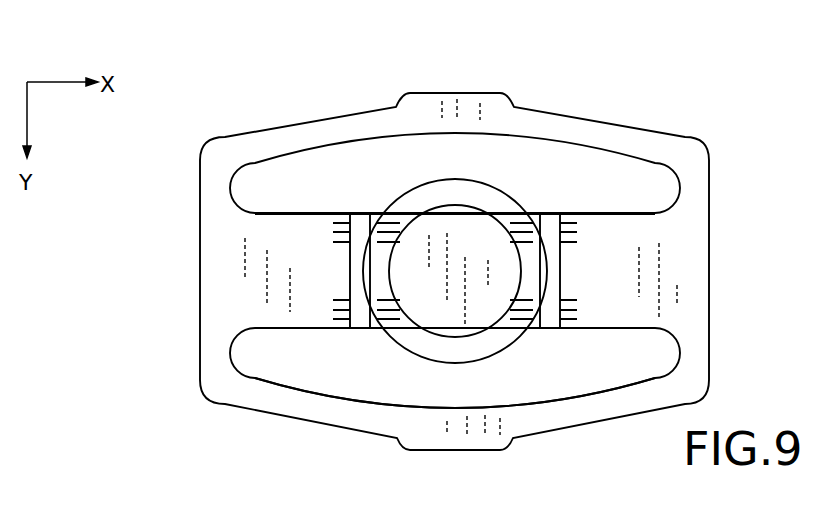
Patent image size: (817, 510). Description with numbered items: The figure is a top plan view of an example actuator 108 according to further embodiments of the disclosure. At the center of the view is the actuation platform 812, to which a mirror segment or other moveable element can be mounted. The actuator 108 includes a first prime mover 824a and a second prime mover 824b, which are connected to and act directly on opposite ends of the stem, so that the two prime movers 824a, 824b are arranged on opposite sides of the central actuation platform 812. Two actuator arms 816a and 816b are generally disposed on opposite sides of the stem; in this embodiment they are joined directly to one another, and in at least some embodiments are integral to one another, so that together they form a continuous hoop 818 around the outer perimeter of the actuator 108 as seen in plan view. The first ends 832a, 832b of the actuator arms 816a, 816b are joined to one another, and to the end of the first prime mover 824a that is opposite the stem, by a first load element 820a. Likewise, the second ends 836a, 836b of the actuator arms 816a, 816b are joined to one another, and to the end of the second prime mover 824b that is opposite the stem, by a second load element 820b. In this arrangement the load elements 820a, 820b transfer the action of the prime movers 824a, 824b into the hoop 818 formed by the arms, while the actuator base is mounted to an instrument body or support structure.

The actuator 108 is at (447, 76).
The actuation platform 812 is at (480, 220).
The actuator arm 816a is at (562, 428).
The actuator arm 816b is at (240, 137).
The continuous hoop 818 is at (342, 417).
The first load element 820a is at (283, 243).
The second load element 820b is at (625, 233).
The first prime mover 824a is at (360, 213).
The second prime mover 824b is at (550, 213).
The first end of actuator arm 832a is at (218, 298).
The first end of actuator arm 832b is at (208, 233).
The second end of actuator arm 836a is at (700, 300).
The second end of actuator arm 836b is at (700, 252).